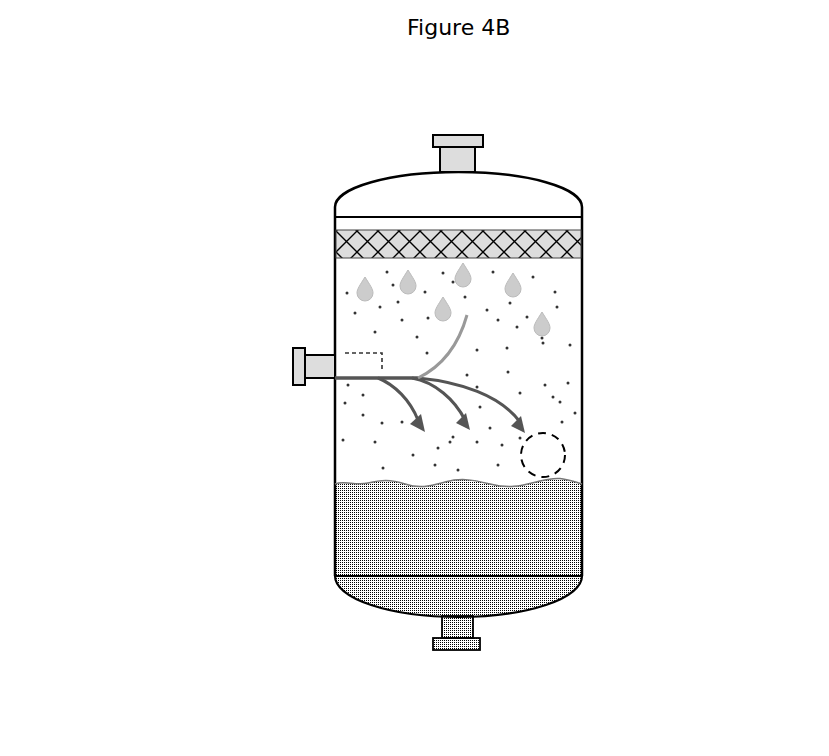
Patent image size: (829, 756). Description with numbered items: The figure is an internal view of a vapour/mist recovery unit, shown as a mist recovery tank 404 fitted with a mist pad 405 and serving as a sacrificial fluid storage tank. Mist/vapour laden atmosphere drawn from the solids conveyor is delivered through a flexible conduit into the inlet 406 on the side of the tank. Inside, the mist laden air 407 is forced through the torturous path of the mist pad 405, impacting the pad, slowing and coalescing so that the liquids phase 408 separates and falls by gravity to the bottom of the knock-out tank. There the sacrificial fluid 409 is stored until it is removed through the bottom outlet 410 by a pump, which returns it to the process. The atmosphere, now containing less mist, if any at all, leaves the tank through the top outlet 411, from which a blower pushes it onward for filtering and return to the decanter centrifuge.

The mist recovery tank 404 is at (168, 482).
The mist pad 405 is at (583, 242).
The inlet 406 is at (278, 365).
The mist laden air 407 is at (563, 457).
The liquids phase 408 is at (553, 318).
The sacrificial fluid 409 is at (548, 527).
The outlet 410 is at (583, 392).
The outlet 411 is at (458, 128).